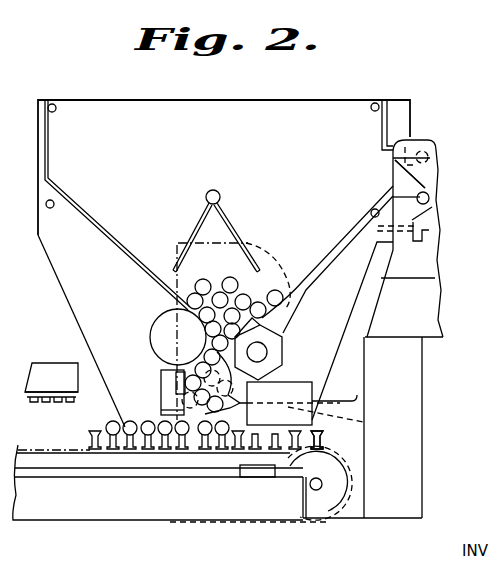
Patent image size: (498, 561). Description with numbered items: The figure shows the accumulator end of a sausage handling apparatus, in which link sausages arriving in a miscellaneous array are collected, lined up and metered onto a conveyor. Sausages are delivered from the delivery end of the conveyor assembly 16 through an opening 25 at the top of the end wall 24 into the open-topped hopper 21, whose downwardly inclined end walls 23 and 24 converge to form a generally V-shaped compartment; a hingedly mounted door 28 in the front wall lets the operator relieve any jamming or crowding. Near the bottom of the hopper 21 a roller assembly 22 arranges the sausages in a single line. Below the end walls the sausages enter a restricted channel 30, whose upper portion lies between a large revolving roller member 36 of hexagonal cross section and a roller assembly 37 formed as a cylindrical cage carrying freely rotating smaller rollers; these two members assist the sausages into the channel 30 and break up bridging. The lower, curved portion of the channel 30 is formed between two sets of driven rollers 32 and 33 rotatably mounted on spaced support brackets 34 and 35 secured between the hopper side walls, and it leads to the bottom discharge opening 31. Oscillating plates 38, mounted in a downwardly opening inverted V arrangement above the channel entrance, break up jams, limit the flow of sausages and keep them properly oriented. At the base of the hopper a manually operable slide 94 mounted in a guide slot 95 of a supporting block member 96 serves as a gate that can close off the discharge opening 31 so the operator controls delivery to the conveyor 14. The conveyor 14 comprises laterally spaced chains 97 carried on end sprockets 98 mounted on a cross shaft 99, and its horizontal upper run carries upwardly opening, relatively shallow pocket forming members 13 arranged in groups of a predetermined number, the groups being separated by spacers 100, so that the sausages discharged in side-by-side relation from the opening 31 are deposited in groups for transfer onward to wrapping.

The pocket forming members 13 is at (323, 438).
The conveyor 14 is at (95, 427).
The delivery end of the conveyor 16 is at (428, 134).
The hopper 21 is at (87, 117).
The roller assembly 22 is at (155, 308).
The end wall 23 is at (95, 223).
The end wall 24 is at (347, 230).
The opening 25 is at (392, 164).
The door 28 is at (276, 260).
The channel 30 is at (176, 392).
The discharge opening 31 is at (226, 436).
The driven rollers 32 is at (273, 338).
The driven rollers 33 is at (161, 408).
The support bracket 34 is at (240, 355).
The support bracket 35 is at (161, 373).
The roller member 36 is at (282, 318).
The roller assembly 37 is at (158, 327).
The oscillating plates 38 is at (197, 217).
The slide 94 is at (347, 400).
The guide slot 95 is at (363, 422).
The supporting block member 96 is at (312, 392).
The chains 97 is at (155, 457).
The end sprockets 98 is at (337, 473).
The cross shaft 99 is at (316, 490).
The spacers 100 is at (89, 436).